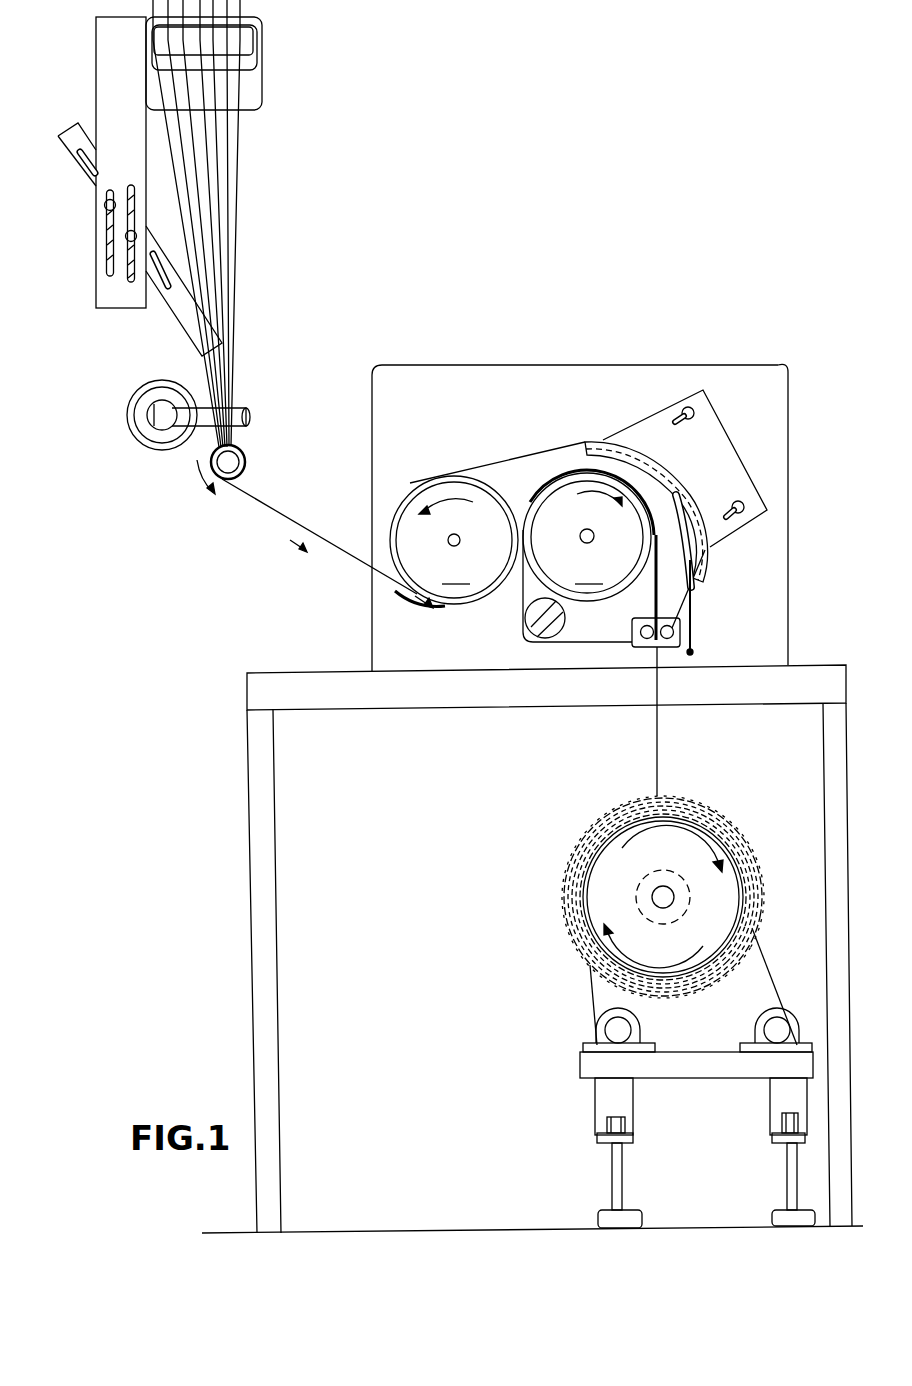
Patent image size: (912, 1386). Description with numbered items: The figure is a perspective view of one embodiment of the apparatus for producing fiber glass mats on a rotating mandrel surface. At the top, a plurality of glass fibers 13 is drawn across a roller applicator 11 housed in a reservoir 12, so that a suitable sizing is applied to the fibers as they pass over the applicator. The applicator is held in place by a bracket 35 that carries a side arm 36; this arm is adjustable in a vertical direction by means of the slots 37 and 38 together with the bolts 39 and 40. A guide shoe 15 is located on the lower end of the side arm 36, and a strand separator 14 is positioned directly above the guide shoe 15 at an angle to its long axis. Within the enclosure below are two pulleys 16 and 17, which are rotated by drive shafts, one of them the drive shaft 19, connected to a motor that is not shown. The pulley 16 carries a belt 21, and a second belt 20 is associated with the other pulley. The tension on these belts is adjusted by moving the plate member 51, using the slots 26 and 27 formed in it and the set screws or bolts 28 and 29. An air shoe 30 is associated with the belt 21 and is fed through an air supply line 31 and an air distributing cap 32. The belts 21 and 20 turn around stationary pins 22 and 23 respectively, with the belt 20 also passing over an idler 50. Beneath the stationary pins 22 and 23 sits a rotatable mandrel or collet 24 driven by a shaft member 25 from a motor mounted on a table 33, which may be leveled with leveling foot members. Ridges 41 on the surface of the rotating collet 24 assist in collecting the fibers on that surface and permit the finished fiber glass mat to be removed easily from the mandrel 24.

The roller applicator 11 is at (265, 25).
The reservoir 12 is at (265, 97).
The glass fibers 13 is at (238, 208).
The strand separator 14 is at (250, 410).
The guide shoe 15 is at (248, 462).
The pulley 16 is at (454, 540).
The pulley 17 is at (589, 555).
The drive shaft 19 is at (582, 535).
The belt 20 is at (583, 647).
The belt 21 is at (521, 450).
The stationary pin 22 is at (682, 633).
The stationary pin 23 is at (647, 643).
The rotatable mandrel 24 is at (737, 890).
The shaft member 25 is at (657, 893).
The slot 26 is at (700, 410).
The slot 27 is at (750, 506).
The set screw 28 is at (698, 420).
The set screw 29 is at (737, 517).
The air shoe 30 is at (707, 571).
The air supply line 31 is at (690, 612).
The air distributing cap 32 is at (692, 496).
The table 33 is at (578, 1066).
The bracket 35 is at (100, 57).
The side arm 36 is at (72, 153).
The slot 37 is at (108, 262).
The slot 38 is at (130, 272).
The bolt 39 is at (105, 206).
The bolt 40 is at (126, 237).
The ridges 41 is at (707, 812).
The idler 50 is at (566, 617).
The plate member 51 is at (750, 467).